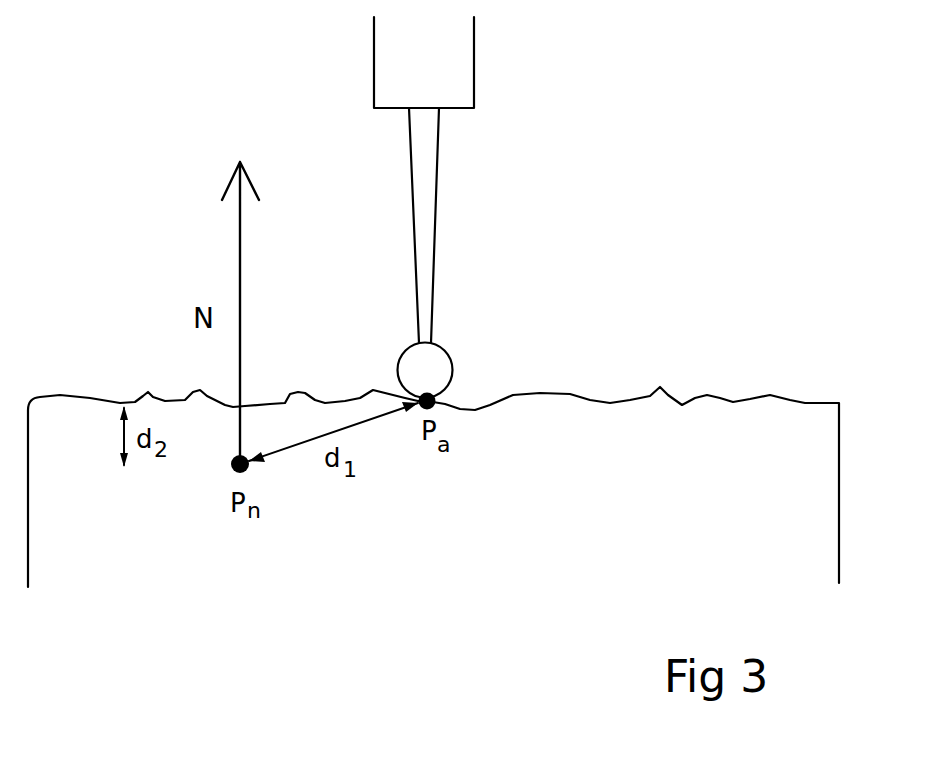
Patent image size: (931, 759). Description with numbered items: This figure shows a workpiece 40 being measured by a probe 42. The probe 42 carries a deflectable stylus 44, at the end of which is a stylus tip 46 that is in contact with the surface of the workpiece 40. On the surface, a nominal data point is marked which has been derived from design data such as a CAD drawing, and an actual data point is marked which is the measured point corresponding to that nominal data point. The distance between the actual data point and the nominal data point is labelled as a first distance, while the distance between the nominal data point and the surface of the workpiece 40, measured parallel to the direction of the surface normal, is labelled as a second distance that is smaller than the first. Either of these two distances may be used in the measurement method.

The workpiece 40 is at (668, 443).
The probe 42 is at (535, 83).
The deflectable stylus 44 is at (435, 218).
The stylus tip 46 is at (453, 368).